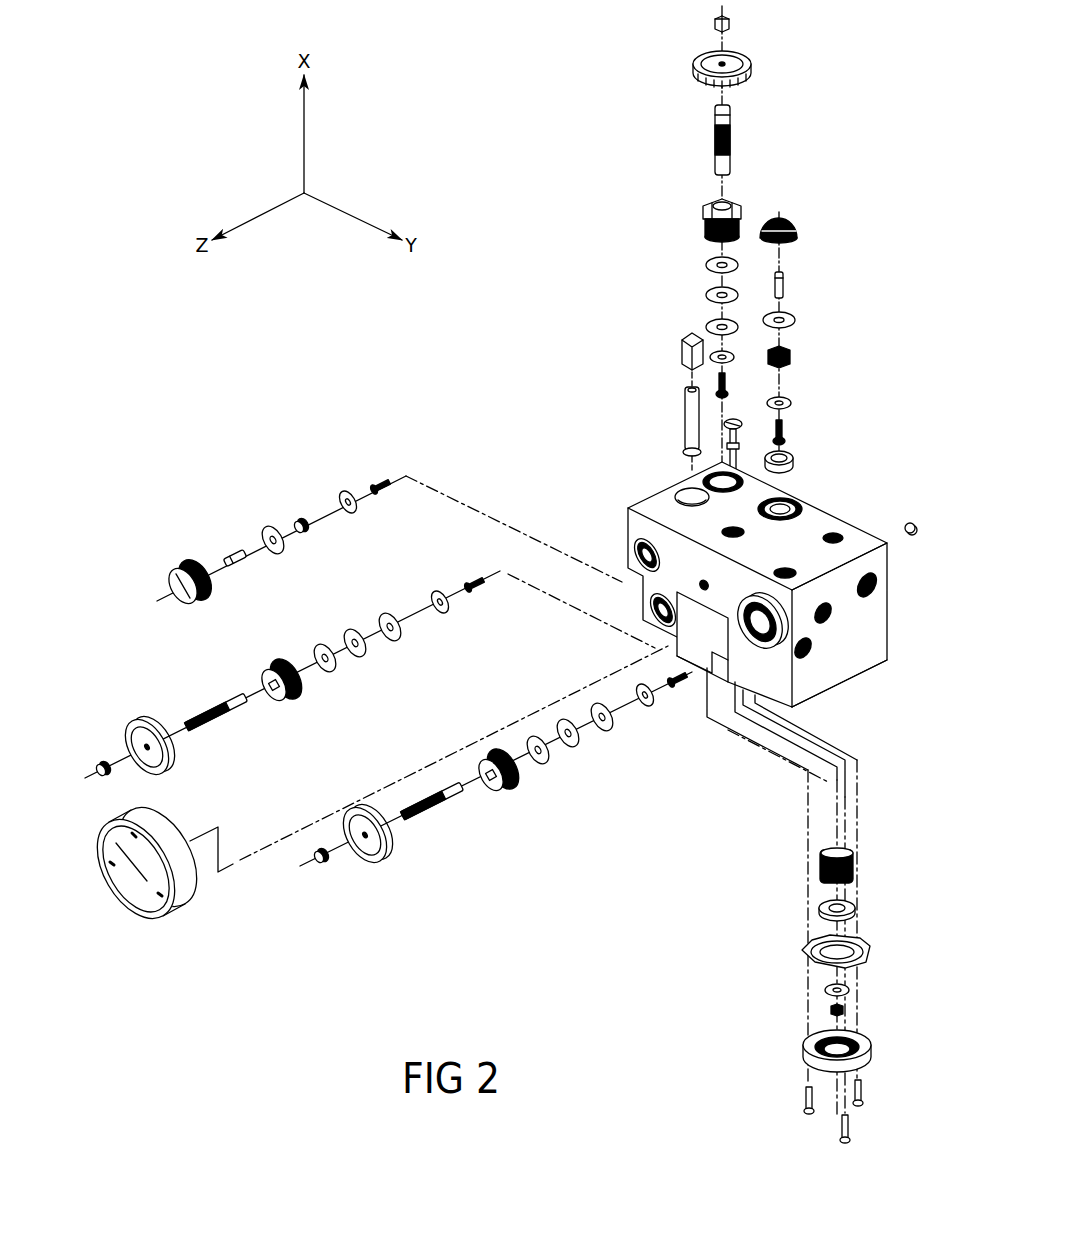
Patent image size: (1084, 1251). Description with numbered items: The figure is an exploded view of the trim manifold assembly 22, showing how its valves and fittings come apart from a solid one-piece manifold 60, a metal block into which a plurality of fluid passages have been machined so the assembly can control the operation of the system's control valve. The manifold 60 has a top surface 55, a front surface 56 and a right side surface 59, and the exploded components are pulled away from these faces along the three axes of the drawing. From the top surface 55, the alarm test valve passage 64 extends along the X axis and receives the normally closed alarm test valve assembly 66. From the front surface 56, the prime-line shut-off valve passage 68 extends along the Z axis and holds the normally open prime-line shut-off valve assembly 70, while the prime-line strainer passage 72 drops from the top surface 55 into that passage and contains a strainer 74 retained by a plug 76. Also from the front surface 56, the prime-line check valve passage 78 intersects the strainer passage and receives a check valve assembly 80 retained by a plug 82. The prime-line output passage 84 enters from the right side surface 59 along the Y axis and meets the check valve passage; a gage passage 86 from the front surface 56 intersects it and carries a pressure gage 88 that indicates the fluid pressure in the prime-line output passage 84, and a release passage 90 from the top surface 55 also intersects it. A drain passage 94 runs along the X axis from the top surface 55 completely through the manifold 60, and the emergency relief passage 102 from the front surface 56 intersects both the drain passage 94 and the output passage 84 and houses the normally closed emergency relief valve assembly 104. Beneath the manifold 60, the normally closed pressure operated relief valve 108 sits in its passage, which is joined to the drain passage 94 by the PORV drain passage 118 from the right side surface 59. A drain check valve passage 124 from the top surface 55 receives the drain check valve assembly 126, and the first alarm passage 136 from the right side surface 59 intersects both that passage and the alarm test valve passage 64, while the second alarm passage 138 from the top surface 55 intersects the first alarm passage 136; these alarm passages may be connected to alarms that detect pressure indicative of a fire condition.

The trim manifold assembly 22 is at (453, 93).
The top surface 55 is at (855, 542).
The front surface 56 is at (633, 525).
The right side surface 59 is at (855, 661).
The manifold 60 is at (862, 648).
The alarm test valve passage 64 is at (712, 478).
The alarm test valve assembly 66 is at (683, 138).
The prime-line shut-off valve passage 68 is at (652, 607).
The prime-line shut-off valve assembly 70 is at (318, 711).
The prime-line strainer passage 72 is at (678, 494).
The strainer 74 is at (688, 428).
The plug 76 is at (683, 355).
The prime-line check valve passage 78 is at (640, 550).
The check valve assembly 80 is at (262, 492).
The plug 82 is at (192, 562).
The prime-line output passage 84 is at (833, 614).
The gage passage 86 is at (665, 630).
The pressure gage 88 is at (163, 822).
The release passage 90 is at (745, 528).
The drain passage 94 is at (792, 572).
The emergency relief passage 102 is at (775, 640).
The emergency relief valve assembly 104 is at (522, 840).
The pressure operated relief valve 108 is at (765, 948).
The PORV drain passage 118 is at (812, 652).
The drain check valve passage 124 is at (786, 505).
The drain check valve assembly 126 is at (808, 315).
The first alarm passage 136 is at (880, 588).
The second alarm passage 138 is at (842, 536).